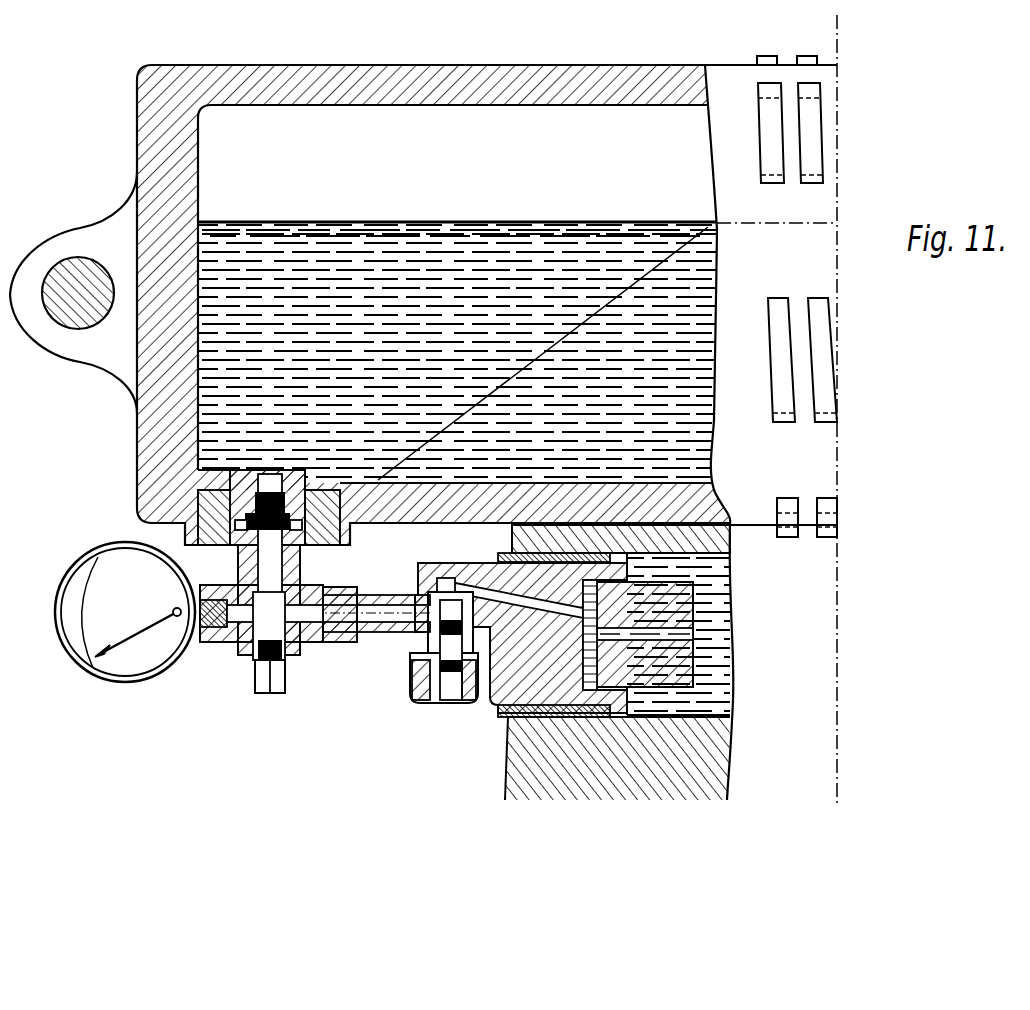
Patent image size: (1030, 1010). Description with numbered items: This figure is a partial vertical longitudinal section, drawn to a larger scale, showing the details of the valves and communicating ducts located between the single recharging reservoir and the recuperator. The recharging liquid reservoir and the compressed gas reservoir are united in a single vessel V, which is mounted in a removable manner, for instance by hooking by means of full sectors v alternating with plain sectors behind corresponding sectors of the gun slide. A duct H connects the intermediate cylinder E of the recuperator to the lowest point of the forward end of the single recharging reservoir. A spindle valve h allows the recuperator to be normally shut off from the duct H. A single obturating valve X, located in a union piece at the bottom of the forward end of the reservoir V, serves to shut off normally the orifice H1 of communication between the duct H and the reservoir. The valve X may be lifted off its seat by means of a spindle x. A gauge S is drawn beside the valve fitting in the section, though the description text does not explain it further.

The single vessel V is at (490, 118).
The full sectors v is at (771, 60).
The intermediate cylinder E is at (728, 622).
The spindle valve h is at (412, 592).
The duct H is at (395, 628).
The obturating valve X is at (236, 548).
The orifice of communication H1 is at (290, 552).
The spindle x is at (262, 665).
The pressure gauge S is at (95, 636).